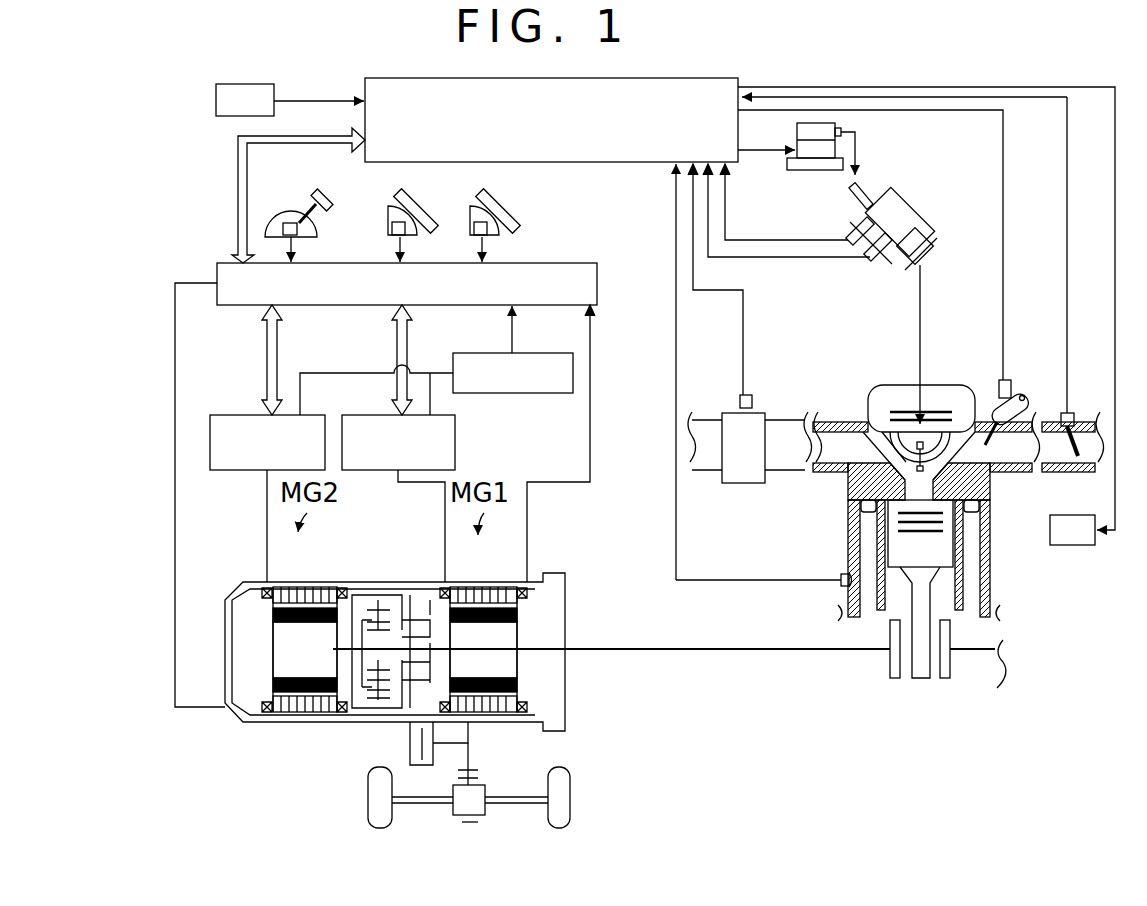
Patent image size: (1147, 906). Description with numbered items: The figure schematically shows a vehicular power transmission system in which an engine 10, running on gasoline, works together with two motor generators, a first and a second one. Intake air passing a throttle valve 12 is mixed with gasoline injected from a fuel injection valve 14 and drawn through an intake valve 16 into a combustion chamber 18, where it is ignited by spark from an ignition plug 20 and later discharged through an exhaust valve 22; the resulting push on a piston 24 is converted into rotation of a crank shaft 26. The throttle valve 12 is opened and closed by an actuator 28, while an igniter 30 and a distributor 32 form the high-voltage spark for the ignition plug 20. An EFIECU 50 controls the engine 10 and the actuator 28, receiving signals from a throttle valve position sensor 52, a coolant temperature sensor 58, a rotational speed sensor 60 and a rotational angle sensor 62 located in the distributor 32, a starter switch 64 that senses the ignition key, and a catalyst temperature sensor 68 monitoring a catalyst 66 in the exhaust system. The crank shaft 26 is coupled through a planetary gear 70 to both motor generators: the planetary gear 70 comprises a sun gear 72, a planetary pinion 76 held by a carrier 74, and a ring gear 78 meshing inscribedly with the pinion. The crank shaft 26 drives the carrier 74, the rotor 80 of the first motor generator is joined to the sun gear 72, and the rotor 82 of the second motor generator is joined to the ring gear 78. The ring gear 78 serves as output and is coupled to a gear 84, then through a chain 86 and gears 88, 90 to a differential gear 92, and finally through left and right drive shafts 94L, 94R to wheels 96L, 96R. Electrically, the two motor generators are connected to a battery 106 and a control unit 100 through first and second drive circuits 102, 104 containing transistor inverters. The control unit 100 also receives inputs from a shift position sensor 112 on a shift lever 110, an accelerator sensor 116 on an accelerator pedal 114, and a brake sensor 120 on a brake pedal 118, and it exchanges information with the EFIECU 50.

The engine 10 is at (892, 470).
The throttle valve 12 is at (1088, 418).
The fuel injection valve 14 is at (1022, 394).
The intake valve 16 is at (985, 490).
The combustion chamber 18 is at (965, 505).
The ignition plug 20 is at (952, 494).
The exhaust valve 22 is at (890, 462).
The piston 24 is at (960, 552).
The crank shaft 26 is at (815, 650).
The actuator 28 is at (1082, 545).
The igniter 30 is at (797, 135).
The distributor 32 is at (893, 192).
The EFIECU 50 is at (641, 163).
The throttle valve position sensor 52 is at (1065, 413).
The coolant temperature sensor 58 is at (843, 582).
The rotational speed sensor 60 is at (848, 228).
The rotational angle sensor 62 is at (873, 258).
The starter switch 64 is at (216, 100).
The catalyst 66 is at (744, 472).
The catalyst temperature sensor 68 is at (752, 398).
The planetary gear 70 is at (365, 625).
The sun gear 72 is at (405, 597).
The carrier 74 is at (335, 625).
The planetary pinion 76 is at (245, 592).
The ring gear 78 is at (372, 590).
The rotor 80 is at (520, 630).
The rotor 82 is at (280, 655).
The gear 84 is at (400, 700).
The chain 86 is at (410, 750).
The gear 88 is at (372, 783).
The gear 90 is at (472, 770).
The differential gear 92 is at (485, 790).
The left drive shaft 94L is at (416, 804).
The right drive shaft 94R is at (510, 804).
The left wheel 96L is at (368, 820).
The right wheel 96R is at (570, 800).
The control unit 100 is at (217, 266).
The first drive circuit 102 is at (455, 452).
The second drive circuit 104 is at (210, 415).
The battery 106 is at (480, 355).
The shift lever 110 is at (330, 205).
The shift position sensor 112 is at (287, 211).
The accelerator pedal 114 is at (432, 207).
The accelerator sensor 116 is at (388, 224).
The brake pedal 118 is at (510, 207).
The brake sensor 120 is at (488, 233).